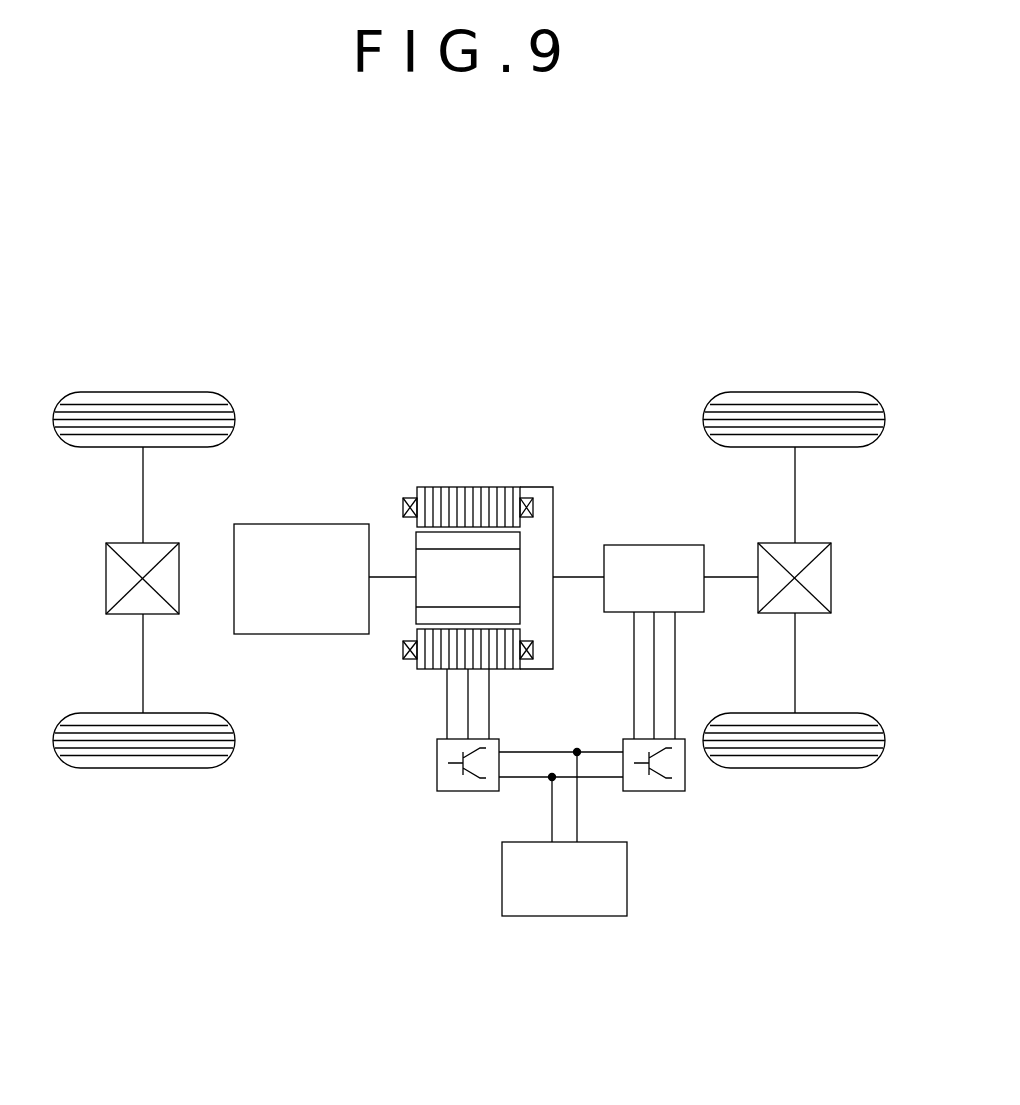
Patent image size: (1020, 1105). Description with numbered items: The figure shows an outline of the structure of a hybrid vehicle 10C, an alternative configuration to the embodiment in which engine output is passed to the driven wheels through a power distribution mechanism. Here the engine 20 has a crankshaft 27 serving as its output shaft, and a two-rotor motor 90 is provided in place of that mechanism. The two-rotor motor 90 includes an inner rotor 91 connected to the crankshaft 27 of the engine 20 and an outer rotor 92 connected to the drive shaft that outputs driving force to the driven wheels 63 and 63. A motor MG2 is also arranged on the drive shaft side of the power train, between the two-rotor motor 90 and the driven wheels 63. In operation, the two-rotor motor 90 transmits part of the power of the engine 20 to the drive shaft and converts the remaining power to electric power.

The hybrid vehicle 10C is at (634, 334).
The engine 20 is at (301, 524).
The crankshaft 27 is at (380, 580).
The driven wheels 63 is at (794, 390).
The two-rotor motor 90 is at (443, 378).
The inner rotor 91 is at (416, 567).
The outer rotor 92 is at (468, 487).
The motor MG2 is at (653, 545).